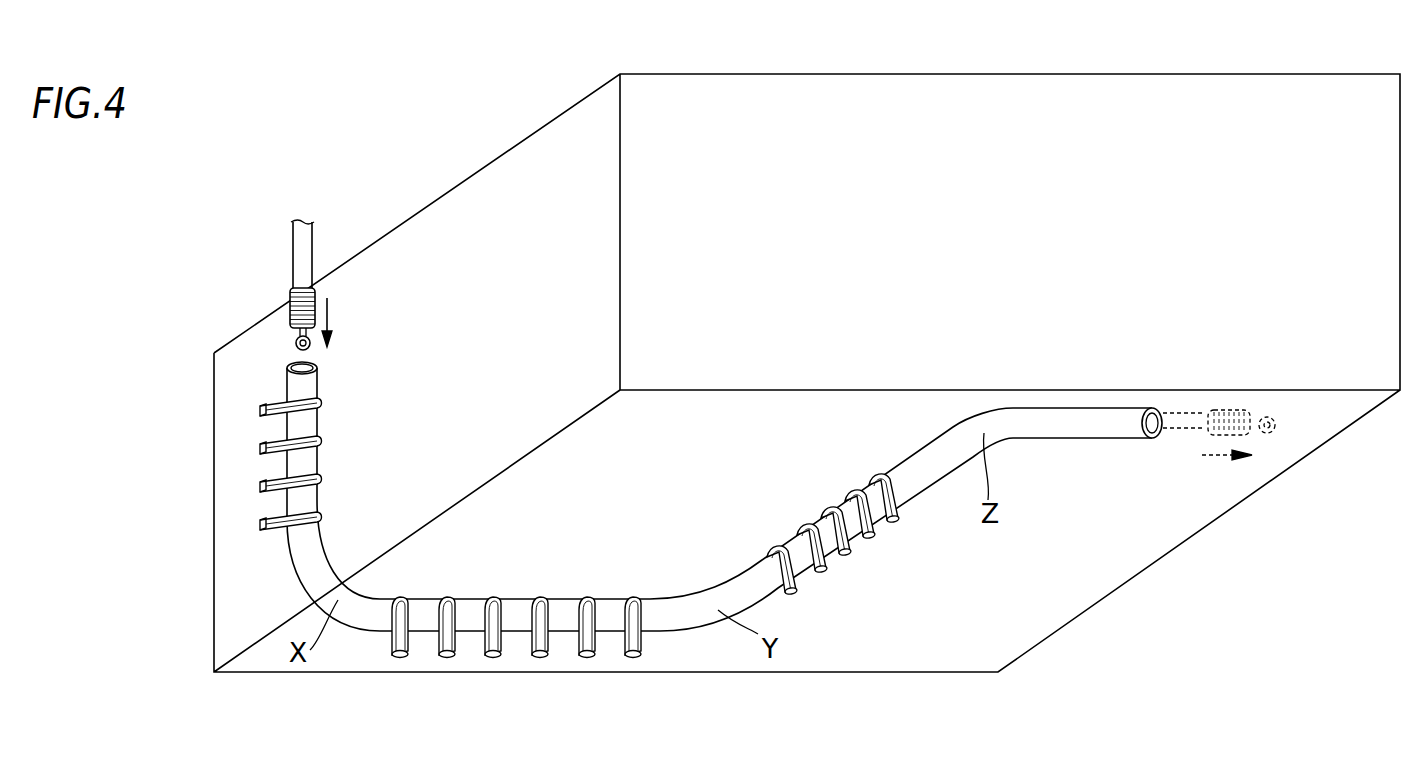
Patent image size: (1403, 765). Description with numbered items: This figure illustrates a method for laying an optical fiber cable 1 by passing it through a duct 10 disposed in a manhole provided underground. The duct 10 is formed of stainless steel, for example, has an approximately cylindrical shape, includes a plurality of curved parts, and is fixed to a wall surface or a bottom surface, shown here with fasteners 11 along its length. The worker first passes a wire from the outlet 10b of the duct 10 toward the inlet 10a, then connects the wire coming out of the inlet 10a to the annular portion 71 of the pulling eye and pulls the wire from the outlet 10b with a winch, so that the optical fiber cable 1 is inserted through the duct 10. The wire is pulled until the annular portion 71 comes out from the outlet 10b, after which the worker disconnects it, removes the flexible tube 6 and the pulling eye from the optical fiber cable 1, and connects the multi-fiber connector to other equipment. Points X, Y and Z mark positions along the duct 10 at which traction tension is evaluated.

The optical fiber cable 1 is at (317, 245).
The flexible tube 6 is at (315, 290).
The annular portion 71 is at (294, 345).
The duct 10 is at (329, 561).
The inlet 10a is at (316, 366).
The outlet 10b is at (1162, 437).
The clip 11 is at (322, 436).